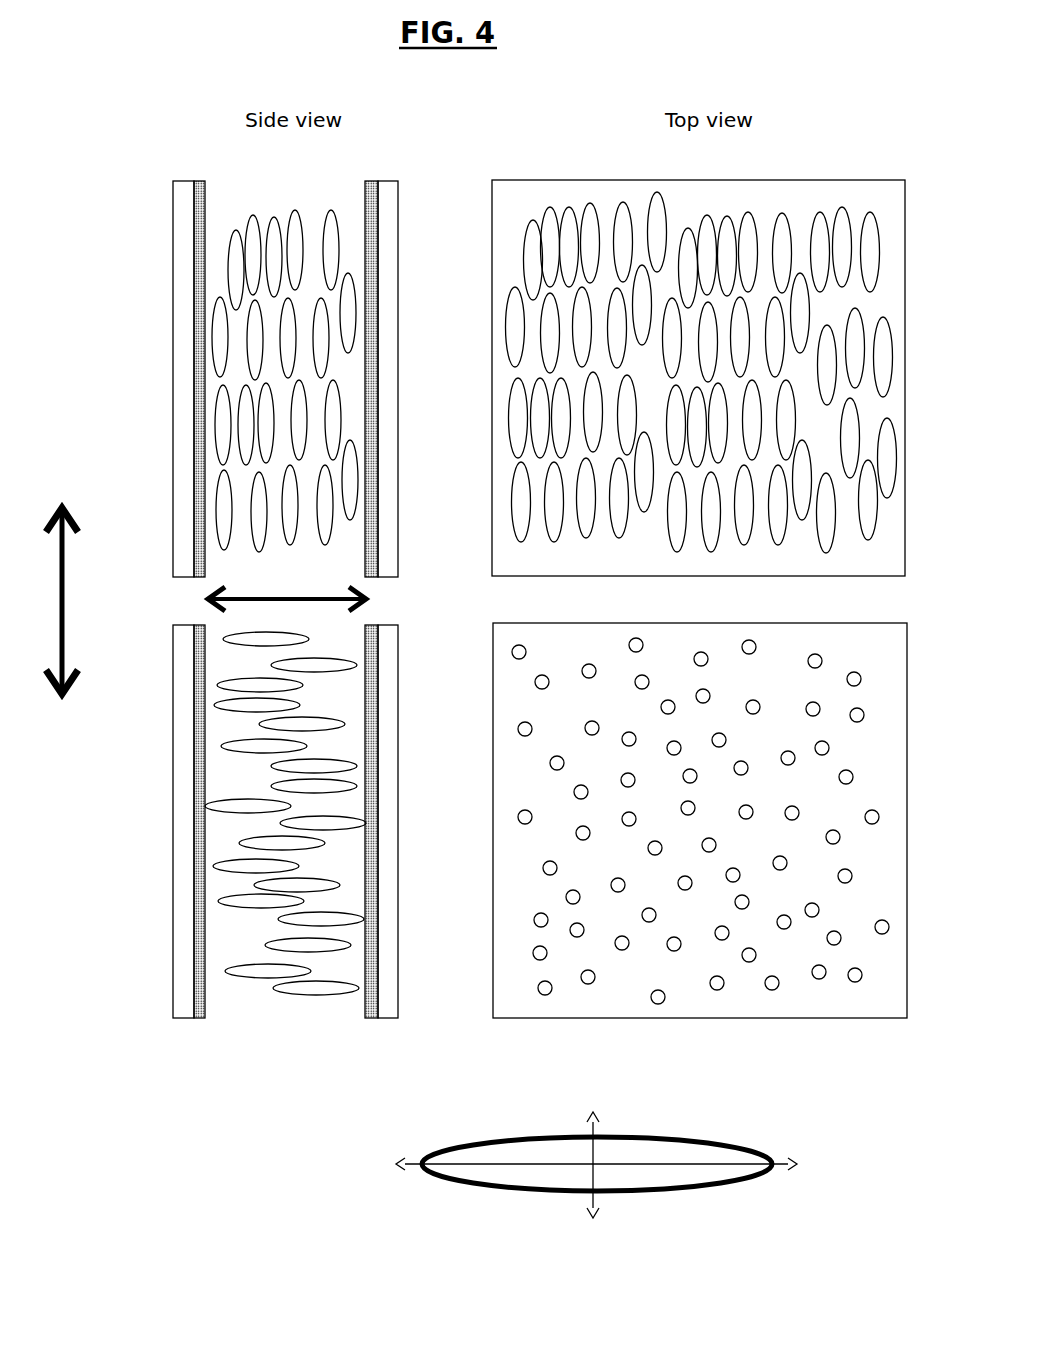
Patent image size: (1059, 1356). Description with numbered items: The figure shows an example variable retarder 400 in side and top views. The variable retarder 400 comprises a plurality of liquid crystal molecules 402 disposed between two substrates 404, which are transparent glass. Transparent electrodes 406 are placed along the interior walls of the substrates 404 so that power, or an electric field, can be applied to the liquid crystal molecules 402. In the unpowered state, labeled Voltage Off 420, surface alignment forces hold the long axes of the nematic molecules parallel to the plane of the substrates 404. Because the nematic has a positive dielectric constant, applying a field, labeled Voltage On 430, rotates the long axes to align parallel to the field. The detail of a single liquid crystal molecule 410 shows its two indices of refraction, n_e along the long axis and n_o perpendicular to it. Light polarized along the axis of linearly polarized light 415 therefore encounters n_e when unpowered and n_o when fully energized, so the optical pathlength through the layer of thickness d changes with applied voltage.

The variable retarder 400 is at (518, 165).
The liquid crystal molecules 402 is at (548, 234).
The substrates 404 is at (383, 308).
The electrodes 406 is at (362, 396).
The liquid crystal molecule 410 is at (467, 1153).
The axis of linearly polarized light 415 is at (77, 638).
The Voltage Off 420 is at (661, 378).
The Voltage On 430 is at (556, 820).